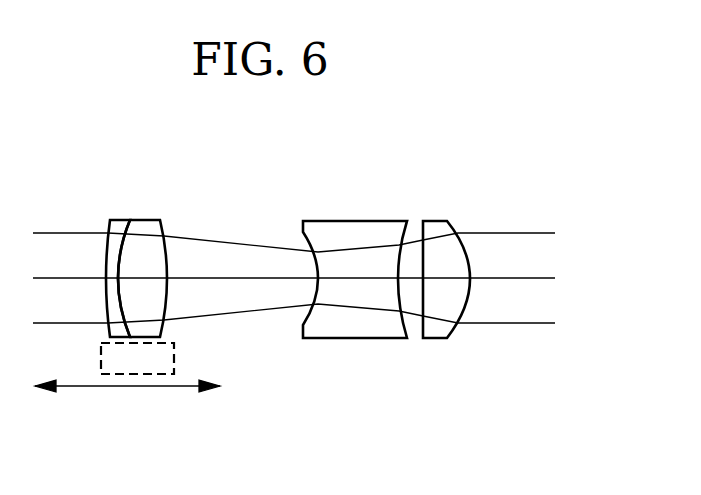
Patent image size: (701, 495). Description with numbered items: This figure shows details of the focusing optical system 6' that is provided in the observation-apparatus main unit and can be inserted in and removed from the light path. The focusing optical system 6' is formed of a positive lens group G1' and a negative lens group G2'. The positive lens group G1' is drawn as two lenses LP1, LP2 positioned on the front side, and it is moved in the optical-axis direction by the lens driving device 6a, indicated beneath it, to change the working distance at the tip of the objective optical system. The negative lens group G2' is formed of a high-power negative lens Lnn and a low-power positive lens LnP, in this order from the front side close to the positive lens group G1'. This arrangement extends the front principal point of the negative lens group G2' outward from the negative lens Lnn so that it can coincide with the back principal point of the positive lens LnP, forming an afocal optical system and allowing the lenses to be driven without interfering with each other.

The focusing optical system 6' is at (331, 216).
The lens driving device 6a is at (174, 360).
The positive lens group G1' is at (132, 216).
The first positive lens LP1 is at (122, 223).
The second positive lens LP2 is at (151, 242).
The negative lens group G2' is at (386, 216).
The high-power negative lens Lnn is at (366, 233).
The low-power positive lens LnP is at (437, 228).